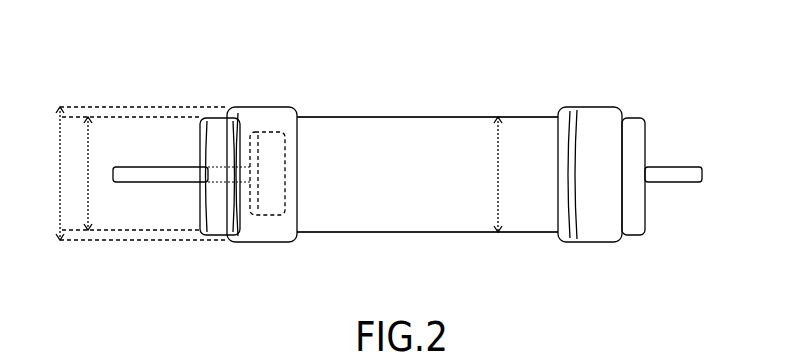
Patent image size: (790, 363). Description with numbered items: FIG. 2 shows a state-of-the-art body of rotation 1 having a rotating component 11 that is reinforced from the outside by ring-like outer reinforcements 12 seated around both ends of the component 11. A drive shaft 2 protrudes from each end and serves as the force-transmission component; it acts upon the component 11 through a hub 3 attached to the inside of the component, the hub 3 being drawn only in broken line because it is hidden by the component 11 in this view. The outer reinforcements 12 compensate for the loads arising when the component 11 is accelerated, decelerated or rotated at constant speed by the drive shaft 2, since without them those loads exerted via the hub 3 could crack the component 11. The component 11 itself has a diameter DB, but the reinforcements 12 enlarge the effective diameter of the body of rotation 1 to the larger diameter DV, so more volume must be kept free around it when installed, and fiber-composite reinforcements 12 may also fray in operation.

The body of rotation 1 is at (437, 79).
The drive shaft 2 is at (160, 159).
The hub 3 is at (270, 194).
The rotating component 11 is at (446, 188).
The ring-like outer reinforcements 12 is at (263, 102).
The diameter with external reinforcements DV is at (127, 173).
The diameter without external reinforcements DB is at (98, 203).